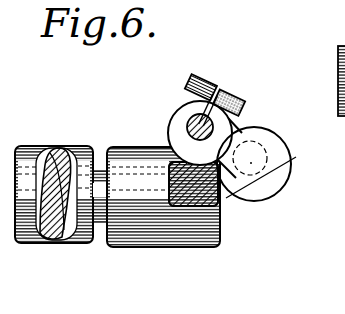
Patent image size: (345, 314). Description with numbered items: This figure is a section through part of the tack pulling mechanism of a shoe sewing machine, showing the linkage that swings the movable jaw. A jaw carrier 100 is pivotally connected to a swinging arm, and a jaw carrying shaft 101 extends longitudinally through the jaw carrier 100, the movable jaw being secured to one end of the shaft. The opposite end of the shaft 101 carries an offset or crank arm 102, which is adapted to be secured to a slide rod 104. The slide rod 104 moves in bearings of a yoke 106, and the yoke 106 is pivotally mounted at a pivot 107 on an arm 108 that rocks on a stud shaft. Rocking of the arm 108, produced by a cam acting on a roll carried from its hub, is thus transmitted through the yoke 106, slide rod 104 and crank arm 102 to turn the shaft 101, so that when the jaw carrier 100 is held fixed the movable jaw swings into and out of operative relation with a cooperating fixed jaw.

The jaw carrier 100 is at (266, 192).
The jaw carrying shaft 101 is at (256, 162).
The crank arm 102 is at (237, 142).
The slide rod 104 is at (194, 121).
The yoke 106 is at (222, 197).
The pivot 107 is at (31, 205).
The arm 108 is at (48, 162).